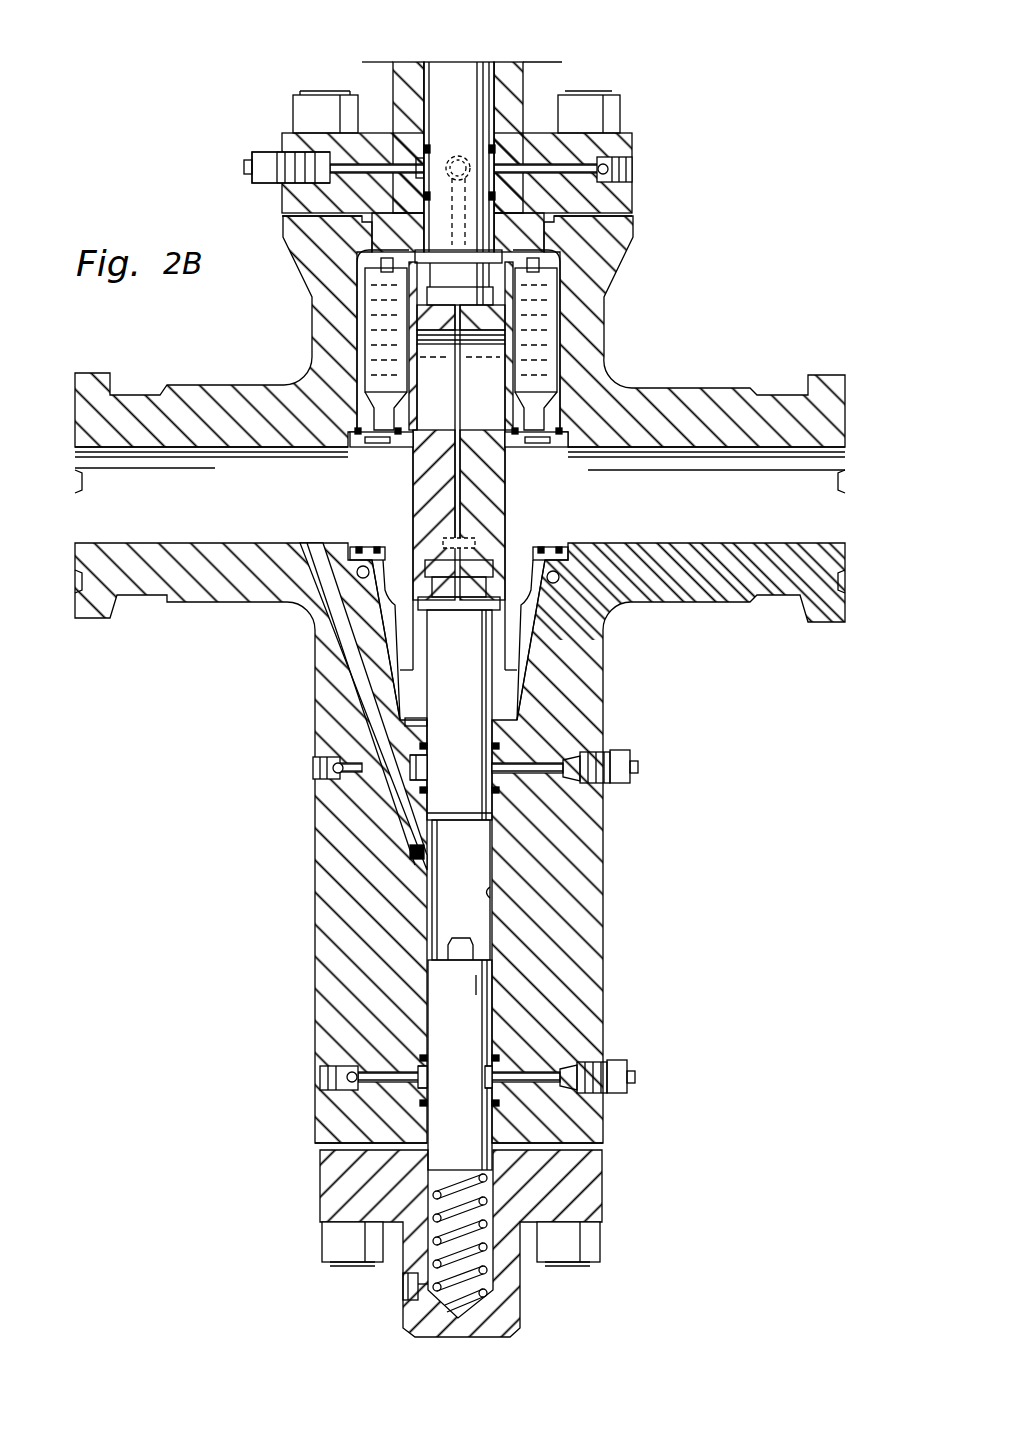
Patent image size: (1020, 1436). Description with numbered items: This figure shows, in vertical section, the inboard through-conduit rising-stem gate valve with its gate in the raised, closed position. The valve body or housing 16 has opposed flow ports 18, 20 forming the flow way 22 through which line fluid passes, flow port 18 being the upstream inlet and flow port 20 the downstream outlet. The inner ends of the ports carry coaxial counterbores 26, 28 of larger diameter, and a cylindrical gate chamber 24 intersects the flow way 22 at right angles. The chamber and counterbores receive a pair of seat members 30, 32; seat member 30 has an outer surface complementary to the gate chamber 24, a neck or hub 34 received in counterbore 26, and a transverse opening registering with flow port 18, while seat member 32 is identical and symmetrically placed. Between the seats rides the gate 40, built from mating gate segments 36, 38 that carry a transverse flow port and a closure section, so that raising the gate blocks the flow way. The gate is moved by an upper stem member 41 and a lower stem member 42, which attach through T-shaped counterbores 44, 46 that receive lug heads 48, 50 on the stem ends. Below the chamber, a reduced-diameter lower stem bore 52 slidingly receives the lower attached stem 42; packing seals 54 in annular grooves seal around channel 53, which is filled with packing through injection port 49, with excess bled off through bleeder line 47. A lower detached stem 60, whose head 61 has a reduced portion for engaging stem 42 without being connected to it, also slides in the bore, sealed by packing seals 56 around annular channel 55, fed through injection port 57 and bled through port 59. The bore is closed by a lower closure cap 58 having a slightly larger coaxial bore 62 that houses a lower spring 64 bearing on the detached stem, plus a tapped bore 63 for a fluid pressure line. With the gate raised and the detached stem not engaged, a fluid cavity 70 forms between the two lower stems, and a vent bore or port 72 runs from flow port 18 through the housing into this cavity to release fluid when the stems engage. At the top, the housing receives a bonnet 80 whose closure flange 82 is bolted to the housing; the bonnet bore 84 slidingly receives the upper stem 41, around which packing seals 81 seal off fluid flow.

The valve body or housing 16 is at (640, 236).
The flow port 18 is at (93, 541).
The flow port 20 is at (808, 543).
The flow way 22 is at (258, 506).
The gate chamber 24 is at (560, 332).
The counterbore 26 is at (361, 550).
The counterbore 28 is at (553, 549).
The seat member 30 is at (397, 626).
The seat member 32 is at (521, 626).
The neck or hub 34 is at (375, 445).
The gate segment 36 is at (420, 496).
The gate segment 38 is at (502, 499).
The gate 40 is at (520, 321).
The upper stem member 41 is at (460, 72).
The lower stem member 42 is at (481, 693).
The counterbore 44 is at (440, 310).
The counterbore 46 is at (447, 572).
The bleeder line 47 is at (340, 772).
The lug head 48 is at (472, 312).
The injection port 49 is at (500, 753).
The lug head 50 is at (470, 578).
The lower stem bore 52 is at (492, 893).
The channel 53 is at (505, 745).
The packing seals 54 is at (428, 768).
The annular channel 55 is at (500, 1060).
The packing seals 56 is at (440, 1095).
The injection port 57 is at (548, 1077).
The lower closure cap 58 is at (603, 1180).
The port 59 is at (372, 1084).
The lower detached stem 60 is at (476, 1003).
The head 61 is at (474, 947).
The bore 62 is at (493, 1262).
The tapped bore 63 is at (404, 1290).
The lower spring 64 is at (427, 1263).
The fluid cavity 70 is at (468, 860).
The vent bore or port 72 is at (405, 815).
The bonnet 80 is at (624, 143).
The packing seals 81 is at (427, 198).
The closure flange 82 is at (280, 141).
The bore 84 is at (432, 72).